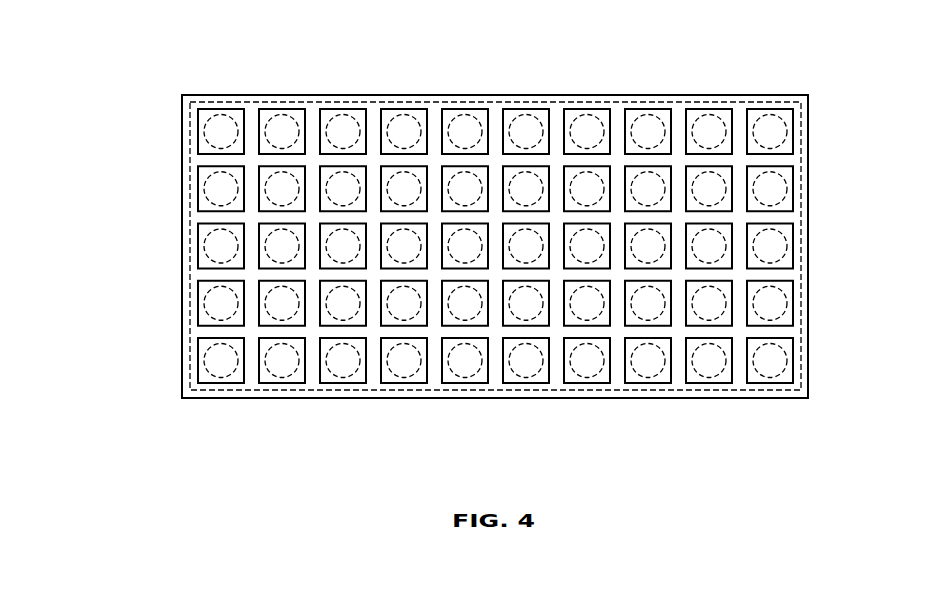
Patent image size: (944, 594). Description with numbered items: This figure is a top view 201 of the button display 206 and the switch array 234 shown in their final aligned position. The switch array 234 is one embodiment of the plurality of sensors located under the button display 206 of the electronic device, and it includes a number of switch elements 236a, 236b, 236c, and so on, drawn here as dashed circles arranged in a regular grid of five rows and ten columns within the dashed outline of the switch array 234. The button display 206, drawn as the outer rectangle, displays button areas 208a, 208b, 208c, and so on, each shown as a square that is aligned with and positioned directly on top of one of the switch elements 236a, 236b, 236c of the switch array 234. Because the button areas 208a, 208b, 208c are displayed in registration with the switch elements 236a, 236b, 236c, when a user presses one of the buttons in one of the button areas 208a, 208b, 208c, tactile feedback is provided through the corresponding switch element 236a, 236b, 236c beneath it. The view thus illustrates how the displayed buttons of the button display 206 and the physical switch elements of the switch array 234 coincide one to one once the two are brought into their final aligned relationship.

The top view 201 is at (148, 80).
The button display 206 is at (181, 333).
The switch array 234 is at (740, 101).
The button area 208a is at (212, 109).
The button area 208b is at (273, 109).
The button area 208c is at (334, 109).
The switch element 236a is at (225, 114).
The switch element 236b is at (286, 114).
The switch element 236c is at (347, 114).